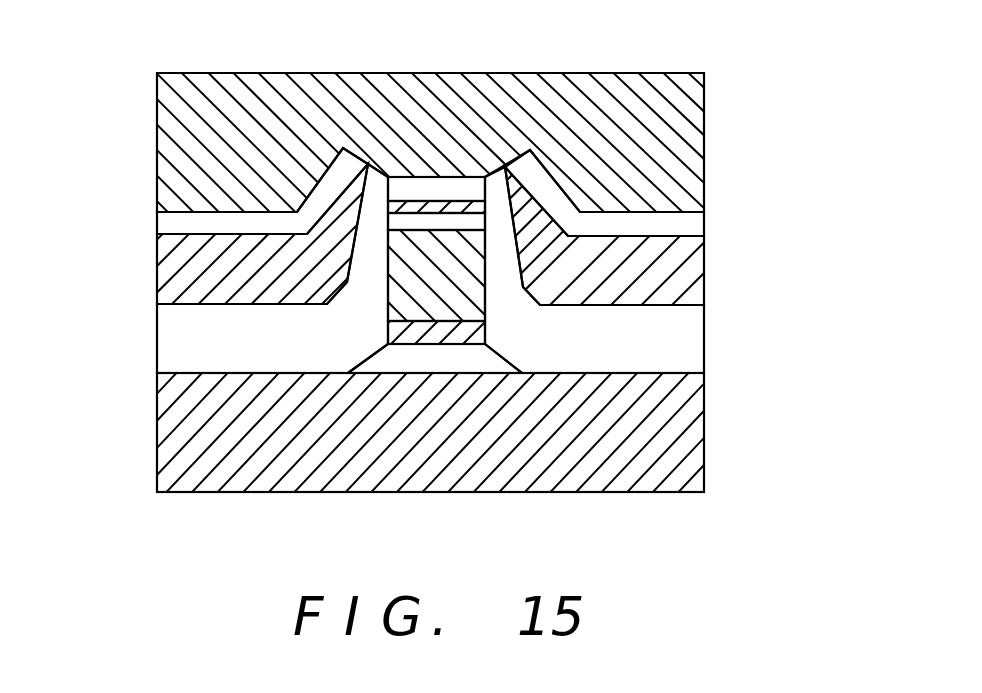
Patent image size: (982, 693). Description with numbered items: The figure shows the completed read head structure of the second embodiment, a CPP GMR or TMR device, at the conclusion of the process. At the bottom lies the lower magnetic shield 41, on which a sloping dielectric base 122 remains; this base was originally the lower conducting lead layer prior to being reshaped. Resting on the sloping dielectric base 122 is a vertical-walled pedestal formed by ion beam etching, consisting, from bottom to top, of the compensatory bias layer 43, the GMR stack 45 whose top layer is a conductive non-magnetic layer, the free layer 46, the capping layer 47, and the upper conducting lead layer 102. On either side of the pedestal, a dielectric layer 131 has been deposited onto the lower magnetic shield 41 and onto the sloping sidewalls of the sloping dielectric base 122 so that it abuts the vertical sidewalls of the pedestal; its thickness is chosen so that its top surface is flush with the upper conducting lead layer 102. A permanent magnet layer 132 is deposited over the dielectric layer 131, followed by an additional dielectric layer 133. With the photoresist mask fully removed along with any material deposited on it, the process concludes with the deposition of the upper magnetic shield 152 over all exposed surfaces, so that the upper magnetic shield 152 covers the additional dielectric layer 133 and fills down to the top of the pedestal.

The upper magnetic shield 152 is at (675, 128).
The additional dielectric layer 133 is at (175, 222).
The permanent magnet layer 132 is at (185, 278).
The dielectric layer 131 is at (180, 340).
The lower magnetic shield 41 is at (165, 433).
The sloping dielectric base 122 is at (435, 451).
The compensatory bias layer 43 is at (409, 346).
The GMR stack 45 is at (520, 346).
The free layer 46 is at (459, 124).
The capping layer 47 is at (348, 346).
The upper conducting lead layer 102 is at (436, 110).